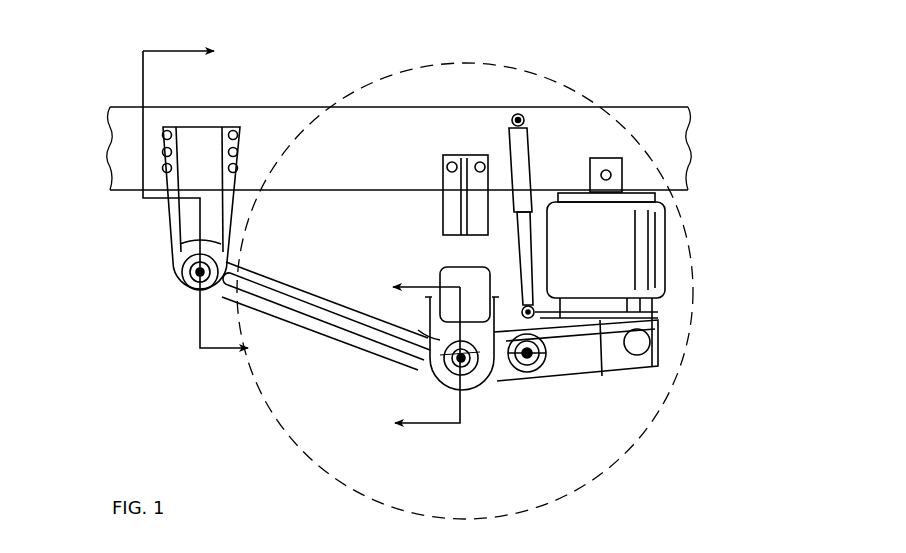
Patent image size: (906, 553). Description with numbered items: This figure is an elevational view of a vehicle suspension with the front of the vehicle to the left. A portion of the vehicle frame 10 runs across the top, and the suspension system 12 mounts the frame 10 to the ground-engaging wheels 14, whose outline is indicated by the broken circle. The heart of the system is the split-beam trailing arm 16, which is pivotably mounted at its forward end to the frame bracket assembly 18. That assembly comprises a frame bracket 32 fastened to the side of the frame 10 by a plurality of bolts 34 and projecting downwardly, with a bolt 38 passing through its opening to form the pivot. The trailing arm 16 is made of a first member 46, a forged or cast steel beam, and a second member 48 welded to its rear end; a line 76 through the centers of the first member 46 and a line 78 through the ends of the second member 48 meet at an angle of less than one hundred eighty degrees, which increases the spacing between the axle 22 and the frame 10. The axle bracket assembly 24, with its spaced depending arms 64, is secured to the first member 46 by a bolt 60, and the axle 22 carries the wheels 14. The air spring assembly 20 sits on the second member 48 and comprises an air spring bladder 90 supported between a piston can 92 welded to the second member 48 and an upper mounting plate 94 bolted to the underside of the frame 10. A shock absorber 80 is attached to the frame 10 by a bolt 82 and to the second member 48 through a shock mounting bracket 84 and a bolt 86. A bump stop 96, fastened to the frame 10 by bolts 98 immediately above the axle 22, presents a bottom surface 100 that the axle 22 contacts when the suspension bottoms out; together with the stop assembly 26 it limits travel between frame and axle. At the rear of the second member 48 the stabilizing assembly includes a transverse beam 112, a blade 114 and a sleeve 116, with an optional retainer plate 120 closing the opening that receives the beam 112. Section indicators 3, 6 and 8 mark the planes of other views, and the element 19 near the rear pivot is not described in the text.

The vehicle frame 10 is at (648, 107).
The suspension system 12 is at (637, 392).
The ground-engaging wheels 14 is at (583, 492).
The split-beam trailing arm 16 is at (325, 380).
The frame bracket assembly 18 is at (97, 283).
The pivot bolt 19 is at (536, 378).
The air spring assembly 20 is at (724, 266).
The axle 22 is at (452, 266).
The axle bracket assembly 24 is at (405, 382).
The stop assembly 26 is at (380, 157).
The frame bracket 32 is at (168, 237).
The bolts 34 is at (168, 127).
The bolt 38 is at (176, 278).
The first member 46 is at (284, 282).
The second member 48 is at (500, 380).
The bolt 60 is at (462, 386).
The depending arms 64 is at (428, 330).
The line 76 is at (176, 253).
The line 78 is at (635, 372).
The shock absorber 80 is at (533, 165).
The bolt 82 is at (521, 114).
The shock mounting bracket 84 is at (543, 305).
The bolt 86 is at (537, 295).
The air spring bladder 90 is at (668, 240).
The piston can 92 is at (656, 310).
The upper mounting plate 94 is at (660, 198).
The bump stop 96 is at (440, 207).
The bolts 98 is at (480, 162).
The bottom surface 100 is at (550, 246).
The transverse beam 112 is at (660, 343).
The blade 114 is at (604, 362).
The sleeve 116 is at (526, 373).
The retainer plate 120 is at (659, 338).
The section line 3- 3 is at (195, 207).
The section line 6- 6 is at (426, 355).
The section 8 is at (460, 340).